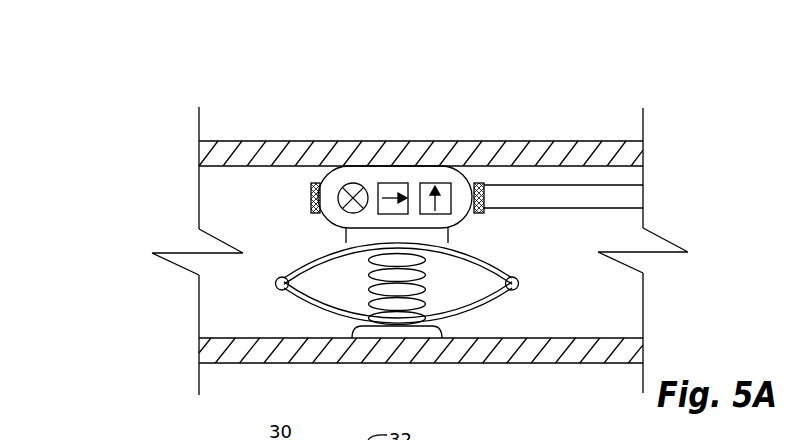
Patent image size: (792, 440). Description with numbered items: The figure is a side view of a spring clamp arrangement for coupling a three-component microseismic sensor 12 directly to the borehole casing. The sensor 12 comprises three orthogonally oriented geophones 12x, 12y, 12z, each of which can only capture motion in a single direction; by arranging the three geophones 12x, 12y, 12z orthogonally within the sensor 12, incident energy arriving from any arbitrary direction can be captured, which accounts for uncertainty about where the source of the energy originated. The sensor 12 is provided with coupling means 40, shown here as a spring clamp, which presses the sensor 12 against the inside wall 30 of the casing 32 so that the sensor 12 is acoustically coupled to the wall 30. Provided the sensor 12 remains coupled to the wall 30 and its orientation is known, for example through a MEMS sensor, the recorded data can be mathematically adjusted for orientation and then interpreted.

The 3-component microseismic sensor 12 is at (455, 157).
The geophone 12x is at (393, 188).
The geophone 12y is at (448, 190).
The geophone 12z is at (352, 187).
The inside wall 30 is at (485, 337).
The casing 32 is at (278, 355).
The coupling means 40 is at (522, 270).